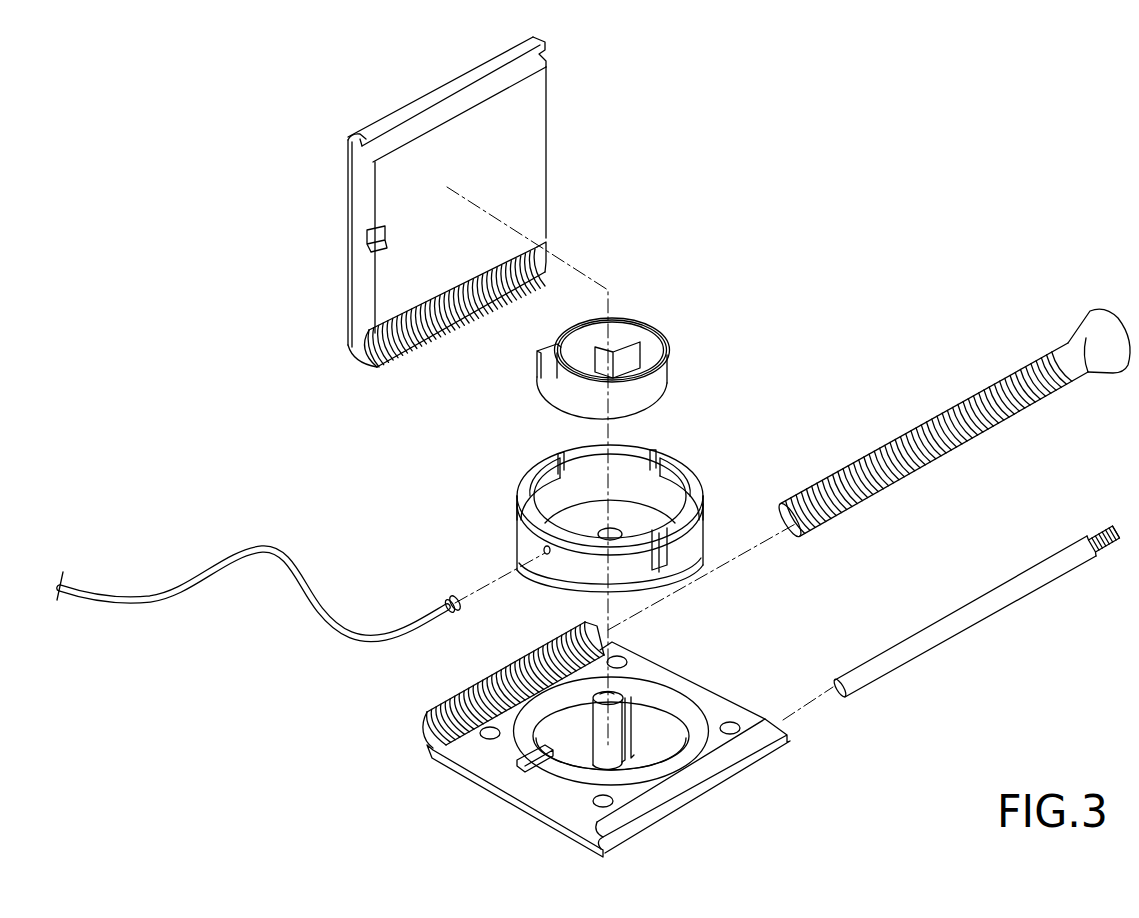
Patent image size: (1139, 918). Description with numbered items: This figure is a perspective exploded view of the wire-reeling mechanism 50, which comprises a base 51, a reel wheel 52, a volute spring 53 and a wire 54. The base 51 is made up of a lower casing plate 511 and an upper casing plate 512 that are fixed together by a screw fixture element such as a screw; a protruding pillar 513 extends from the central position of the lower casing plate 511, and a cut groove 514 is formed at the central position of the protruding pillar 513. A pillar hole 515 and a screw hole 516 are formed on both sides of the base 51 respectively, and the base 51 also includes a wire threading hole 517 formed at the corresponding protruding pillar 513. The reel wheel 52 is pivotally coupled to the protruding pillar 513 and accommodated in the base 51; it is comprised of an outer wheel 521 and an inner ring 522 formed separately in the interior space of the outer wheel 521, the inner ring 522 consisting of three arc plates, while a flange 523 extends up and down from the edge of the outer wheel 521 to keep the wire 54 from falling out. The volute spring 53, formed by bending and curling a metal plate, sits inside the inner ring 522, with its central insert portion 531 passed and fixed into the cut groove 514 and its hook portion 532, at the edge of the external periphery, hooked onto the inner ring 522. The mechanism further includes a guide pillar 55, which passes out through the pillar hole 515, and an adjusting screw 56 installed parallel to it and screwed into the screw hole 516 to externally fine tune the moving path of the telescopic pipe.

The wire-reeling mechanism 50 is at (838, 158).
The base 51 is at (389, 201).
The lower casing plate 511 is at (614, 739).
The upper casing plate 512 is at (368, 190).
The protruding pillar 513 is at (600, 748).
The cut groove 514 is at (626, 728).
The pillar hole 515 is at (762, 736).
The screw hole 516 is at (428, 733).
The wire threading hole 517 is at (367, 245).
The reel wheel 52 is at (628, 496).
The outer wheel 521 is at (683, 547).
The inner ring 522 is at (548, 497).
The flange 523 is at (675, 468).
The volute spring 53 is at (607, 359).
The insert portion 531 is at (602, 350).
The hook portion 532 is at (540, 367).
The wire 54 is at (248, 552).
The guide pillar 55 is at (1024, 585).
The adjusting screw 56 is at (985, 392).